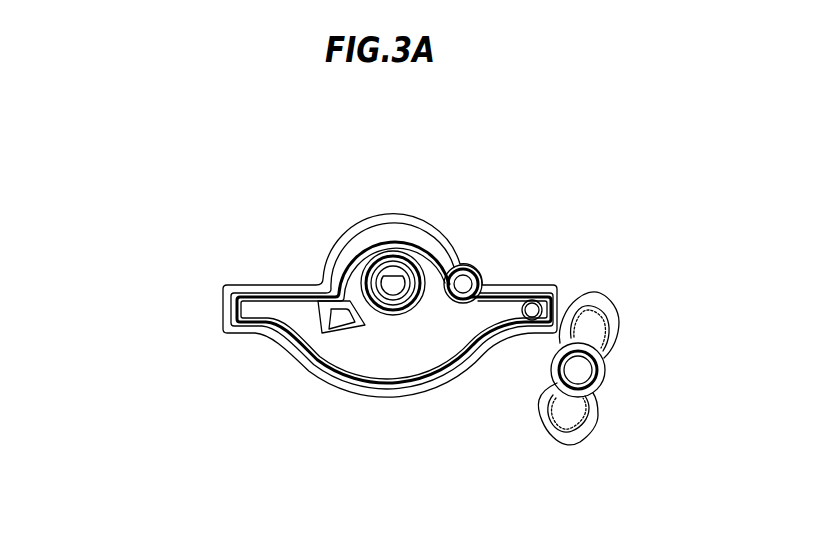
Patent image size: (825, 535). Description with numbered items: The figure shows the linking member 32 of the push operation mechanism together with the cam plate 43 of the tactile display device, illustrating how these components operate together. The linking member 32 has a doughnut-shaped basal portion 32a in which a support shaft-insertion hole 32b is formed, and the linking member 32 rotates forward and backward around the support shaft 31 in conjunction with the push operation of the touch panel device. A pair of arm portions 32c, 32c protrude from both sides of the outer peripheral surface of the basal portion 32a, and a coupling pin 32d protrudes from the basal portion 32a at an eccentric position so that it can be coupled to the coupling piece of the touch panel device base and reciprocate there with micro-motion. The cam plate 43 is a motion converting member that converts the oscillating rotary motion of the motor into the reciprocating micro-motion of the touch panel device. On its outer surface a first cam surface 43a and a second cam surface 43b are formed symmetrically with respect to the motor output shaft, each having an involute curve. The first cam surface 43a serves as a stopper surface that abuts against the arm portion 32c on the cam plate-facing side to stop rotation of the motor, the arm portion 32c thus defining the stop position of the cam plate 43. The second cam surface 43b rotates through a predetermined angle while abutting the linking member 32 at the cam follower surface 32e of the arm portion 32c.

The support shaft 31 is at (388, 280).
The linking member 32 is at (302, 350).
The basal portion 32a is at (373, 363).
The support shaft-insertion hole 32b is at (411, 265).
The arm portion 32c is at (275, 286).
The coupling pin 32d is at (465, 282).
The cam follower surface 32e is at (522, 337).
The cam plate 43 is at (606, 370).
The first cam surface 43a is at (577, 288).
The second cam surface 43b is at (522, 410).